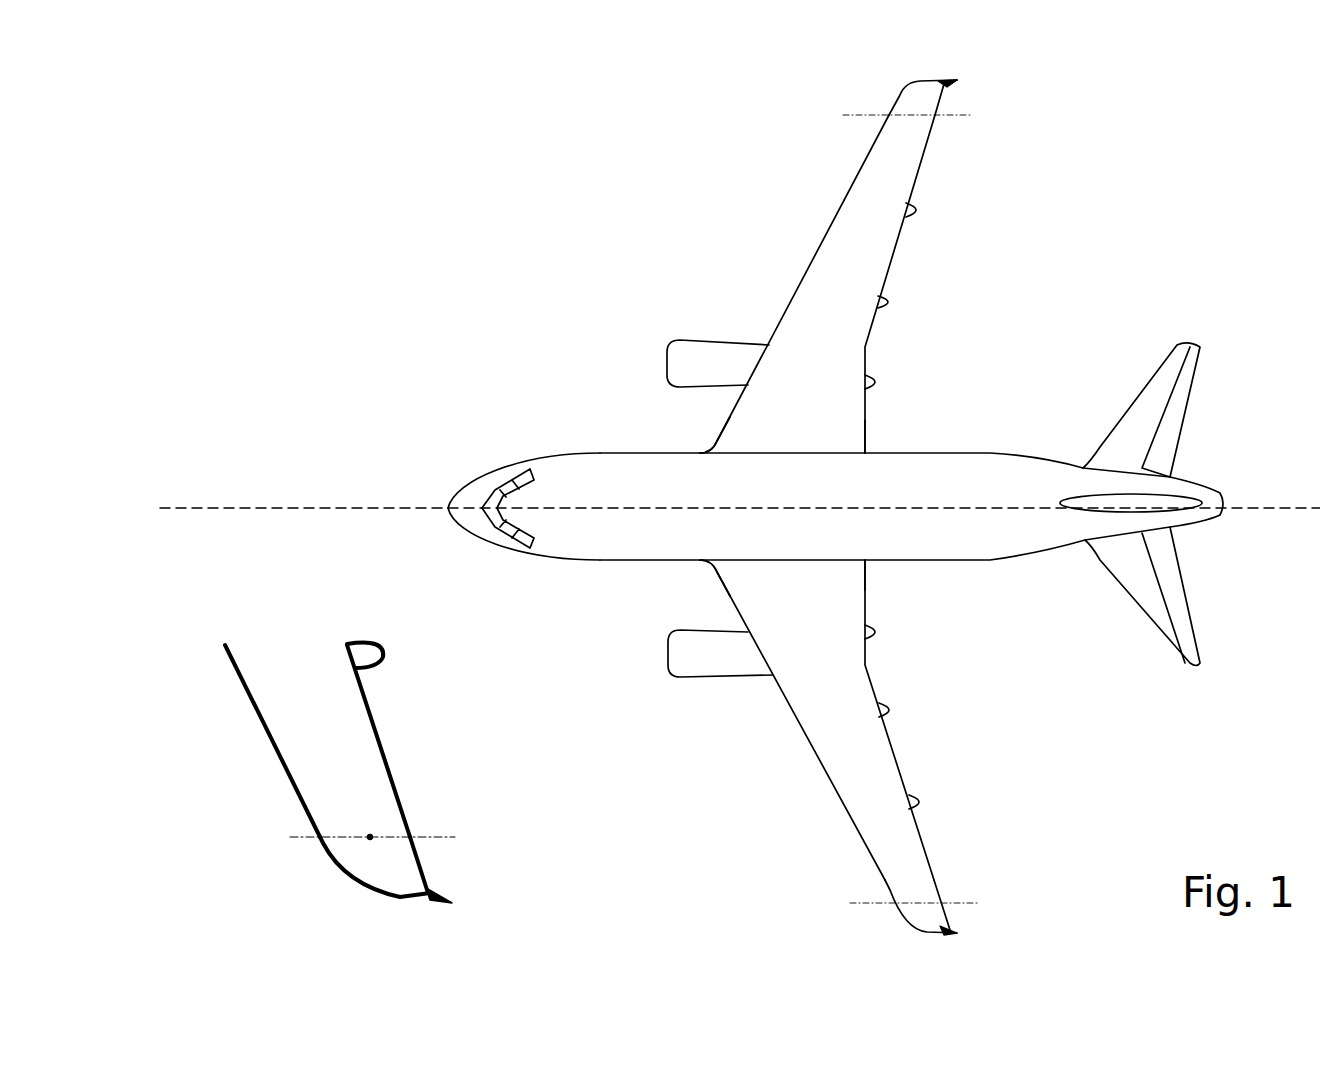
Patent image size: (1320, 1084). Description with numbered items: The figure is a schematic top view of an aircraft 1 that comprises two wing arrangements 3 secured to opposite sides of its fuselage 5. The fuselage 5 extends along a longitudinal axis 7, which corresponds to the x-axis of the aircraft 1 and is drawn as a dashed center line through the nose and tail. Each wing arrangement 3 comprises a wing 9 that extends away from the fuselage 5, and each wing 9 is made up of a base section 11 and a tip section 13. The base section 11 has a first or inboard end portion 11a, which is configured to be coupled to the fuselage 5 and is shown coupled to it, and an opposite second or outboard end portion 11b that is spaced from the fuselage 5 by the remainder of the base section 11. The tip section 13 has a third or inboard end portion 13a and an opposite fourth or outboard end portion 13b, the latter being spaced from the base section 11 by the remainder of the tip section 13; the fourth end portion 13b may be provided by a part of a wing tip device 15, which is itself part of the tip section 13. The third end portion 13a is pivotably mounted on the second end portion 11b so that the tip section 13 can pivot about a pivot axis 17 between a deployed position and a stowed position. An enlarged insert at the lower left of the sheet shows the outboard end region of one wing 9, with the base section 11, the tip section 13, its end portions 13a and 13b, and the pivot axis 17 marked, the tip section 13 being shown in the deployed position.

The aircraft 1 is at (1144, 229).
The wing arrangement 3 is at (759, 186).
The fuselage 5 is at (1005, 553).
The longitudinal axis 7 is at (222, 508).
The wing 9 is at (797, 280).
The base section 11 is at (863, 273).
The first end portion 11a is at (843, 443).
The second end portion 11b is at (933, 123).
The tip section 13 is at (925, 93).
The third end portion 13a is at (312, 848).
The fourth end portion 13b is at (464, 910).
The wing tip device 15 is at (953, 80).
The pivot axis 17 is at (433, 838).